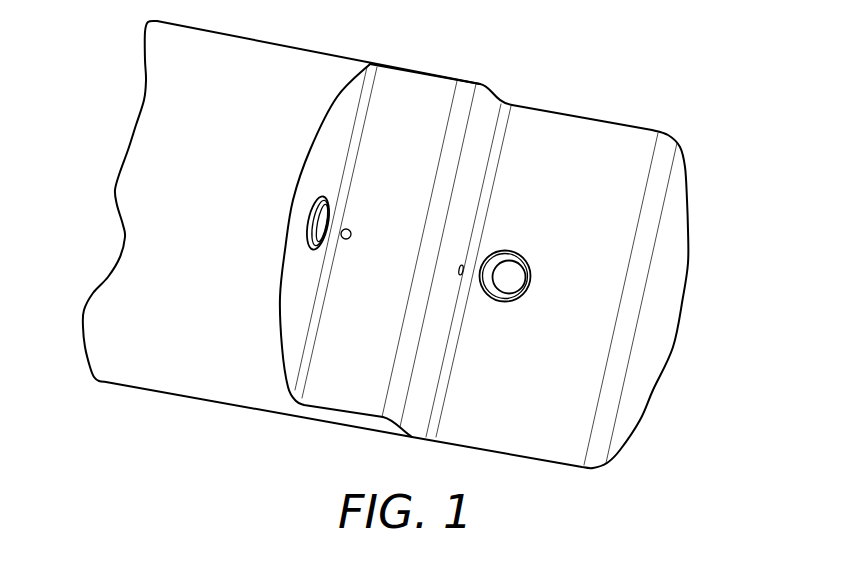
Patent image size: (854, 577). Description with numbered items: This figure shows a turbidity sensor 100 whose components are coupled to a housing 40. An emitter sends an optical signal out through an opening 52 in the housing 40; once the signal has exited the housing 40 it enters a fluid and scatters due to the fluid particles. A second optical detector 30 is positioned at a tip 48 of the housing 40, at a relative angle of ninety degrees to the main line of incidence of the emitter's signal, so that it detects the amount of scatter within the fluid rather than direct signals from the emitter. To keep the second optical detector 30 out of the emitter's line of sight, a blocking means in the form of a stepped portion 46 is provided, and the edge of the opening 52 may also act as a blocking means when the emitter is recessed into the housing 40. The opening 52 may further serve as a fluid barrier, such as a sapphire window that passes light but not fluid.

The turbidity sensor 100 is at (665, 63).
The housing 40 is at (226, 125).
The stepped portion 46 is at (483, 107).
The tip 48 is at (583, 391).
The opening 52 is at (309, 222).
The second optical detector 30 is at (514, 273).